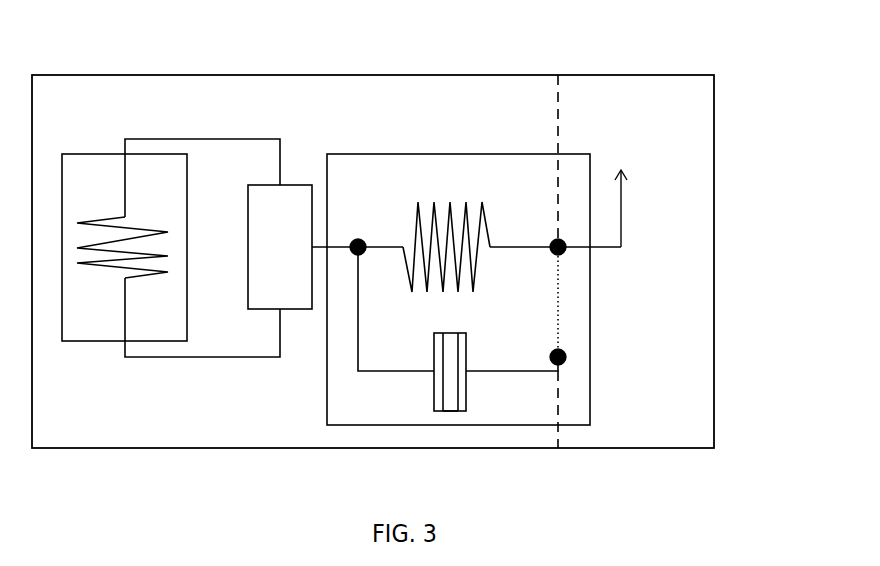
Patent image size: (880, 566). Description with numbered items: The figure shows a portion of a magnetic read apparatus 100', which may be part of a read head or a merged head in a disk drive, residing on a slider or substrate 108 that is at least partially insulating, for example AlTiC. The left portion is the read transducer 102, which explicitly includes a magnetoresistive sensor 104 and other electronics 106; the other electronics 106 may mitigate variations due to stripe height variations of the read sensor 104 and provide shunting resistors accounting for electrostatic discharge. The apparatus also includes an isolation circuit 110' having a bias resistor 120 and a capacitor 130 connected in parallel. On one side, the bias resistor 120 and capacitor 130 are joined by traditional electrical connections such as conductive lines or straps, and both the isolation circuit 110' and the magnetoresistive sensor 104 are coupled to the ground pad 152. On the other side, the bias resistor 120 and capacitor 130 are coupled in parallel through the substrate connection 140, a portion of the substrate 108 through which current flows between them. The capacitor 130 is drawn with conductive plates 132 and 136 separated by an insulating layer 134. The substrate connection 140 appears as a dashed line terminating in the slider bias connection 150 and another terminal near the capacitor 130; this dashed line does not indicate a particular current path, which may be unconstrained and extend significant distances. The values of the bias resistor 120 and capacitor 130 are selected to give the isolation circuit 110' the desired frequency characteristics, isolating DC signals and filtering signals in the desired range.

The magnetic read apparatus 100' is at (373, 226).
The read transducer 102 is at (170, 101).
The magnetoresistive sensor 104 is at (124, 247).
The other electronics 106 is at (241, 248).
The slider or substrate 108 is at (629, 261).
The isolation circuit 110' is at (477, 289).
The bias resistor 120 is at (452, 172).
The capacitor 130 is at (429, 420).
The conductive plate 132 is at (433, 387).
The insulating layer 134 is at (448, 412).
The conductive plate 136 is at (463, 402).
The substrate connection 140 is at (574, 316).
The slider bias connection 150 is at (562, 253).
The ground pad 152 is at (358, 247).